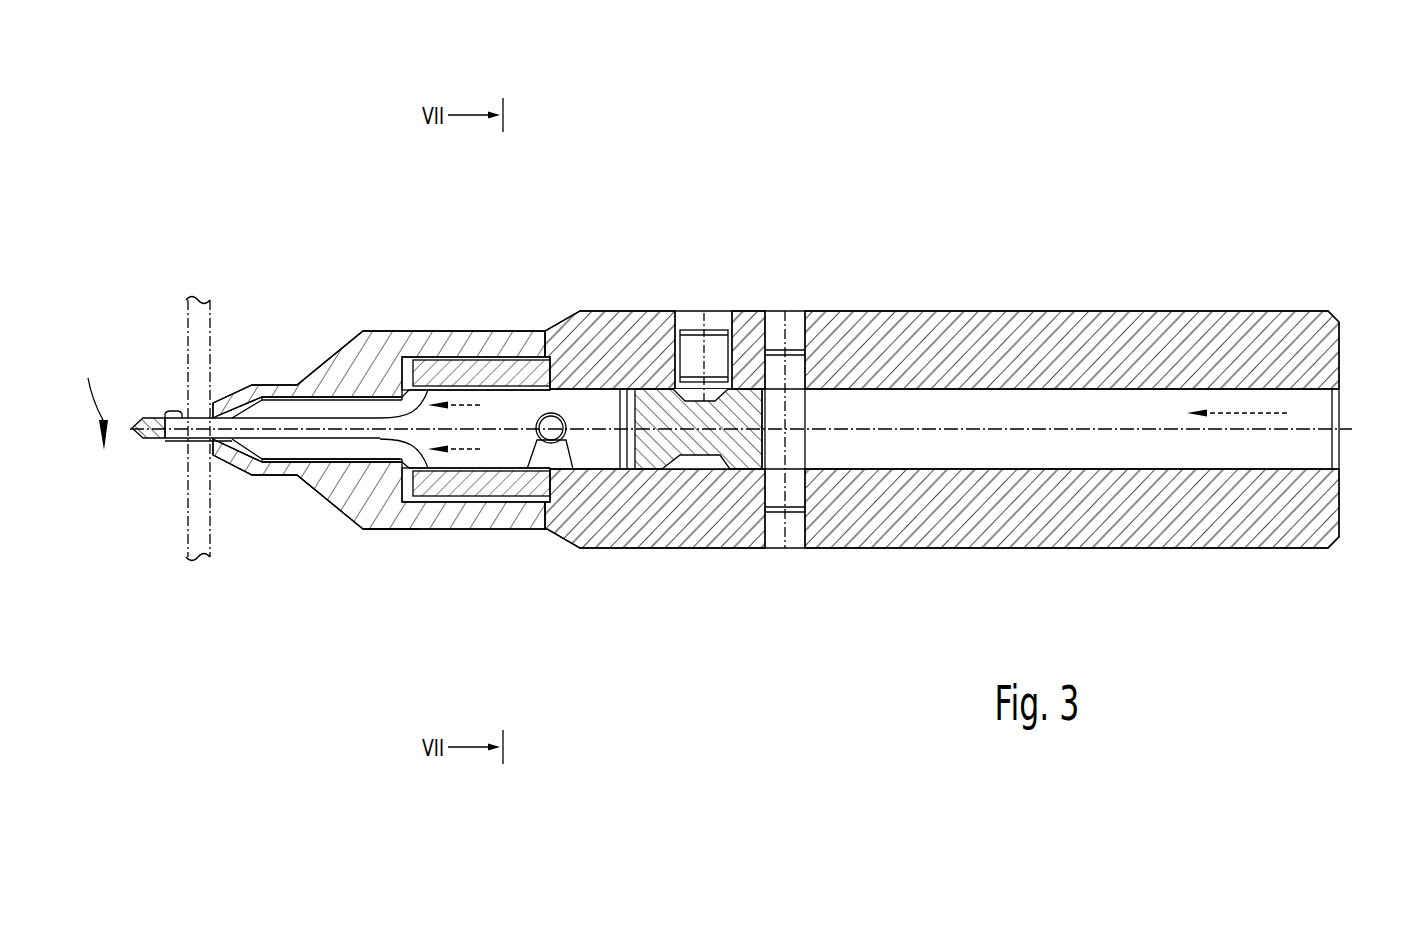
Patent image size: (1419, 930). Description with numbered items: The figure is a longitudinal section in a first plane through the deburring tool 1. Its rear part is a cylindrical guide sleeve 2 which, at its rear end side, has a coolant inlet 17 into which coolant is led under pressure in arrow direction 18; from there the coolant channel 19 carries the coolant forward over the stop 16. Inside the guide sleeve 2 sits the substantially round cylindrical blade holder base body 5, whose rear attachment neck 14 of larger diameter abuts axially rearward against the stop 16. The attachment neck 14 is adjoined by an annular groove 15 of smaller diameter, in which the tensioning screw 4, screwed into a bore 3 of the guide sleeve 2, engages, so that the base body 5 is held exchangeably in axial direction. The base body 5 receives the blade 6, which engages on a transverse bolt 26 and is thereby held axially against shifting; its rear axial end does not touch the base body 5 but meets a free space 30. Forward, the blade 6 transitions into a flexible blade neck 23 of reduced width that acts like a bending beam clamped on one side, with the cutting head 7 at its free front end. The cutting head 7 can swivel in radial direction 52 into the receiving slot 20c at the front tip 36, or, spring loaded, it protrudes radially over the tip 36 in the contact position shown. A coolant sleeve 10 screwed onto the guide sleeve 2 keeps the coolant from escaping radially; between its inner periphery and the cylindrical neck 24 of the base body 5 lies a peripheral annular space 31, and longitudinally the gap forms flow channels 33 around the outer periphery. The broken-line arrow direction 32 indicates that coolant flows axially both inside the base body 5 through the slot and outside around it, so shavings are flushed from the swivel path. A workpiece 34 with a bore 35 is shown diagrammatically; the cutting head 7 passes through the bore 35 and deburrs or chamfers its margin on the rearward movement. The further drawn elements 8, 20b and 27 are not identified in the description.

The tool 1 is at (1055, 248).
The guide sleeve 2 is at (996, 311).
The bore 3 is at (690, 313).
The tensioning screw 4 is at (722, 346).
The blade holder base body 5 is at (648, 470).
The blade 6 is at (503, 470).
The cutting head 7 is at (172, 408).
The lower clamping jaw 8 is at (220, 448).
The coolant sleeve 10 is at (437, 269).
The attachment neck 14 is at (748, 454).
The annular groove 15 is at (697, 462).
The stop 16 is at (803, 395).
The coolant inlet 17 is at (1312, 407).
The arrow direction 18 is at (1247, 412).
The coolant channel 19 is at (1143, 410).
The lower tube section 20b is at (365, 470).
The receiving slot 20c is at (170, 443).
The blade neck 23 is at (319, 430).
The cylindrical neck 24 is at (280, 448).
The transverse bolt 26 is at (553, 434).
The flange 27 is at (490, 355).
The free space 30 is at (627, 410).
The annular space 31 is at (403, 462).
The arrow direction 32 is at (468, 388).
The flow channels 33 is at (352, 330).
The workpiece 34 is at (200, 360).
The bore 35 is at (205, 410).
The front tip 36 is at (147, 443).
The radial direction 52 is at (87, 398).